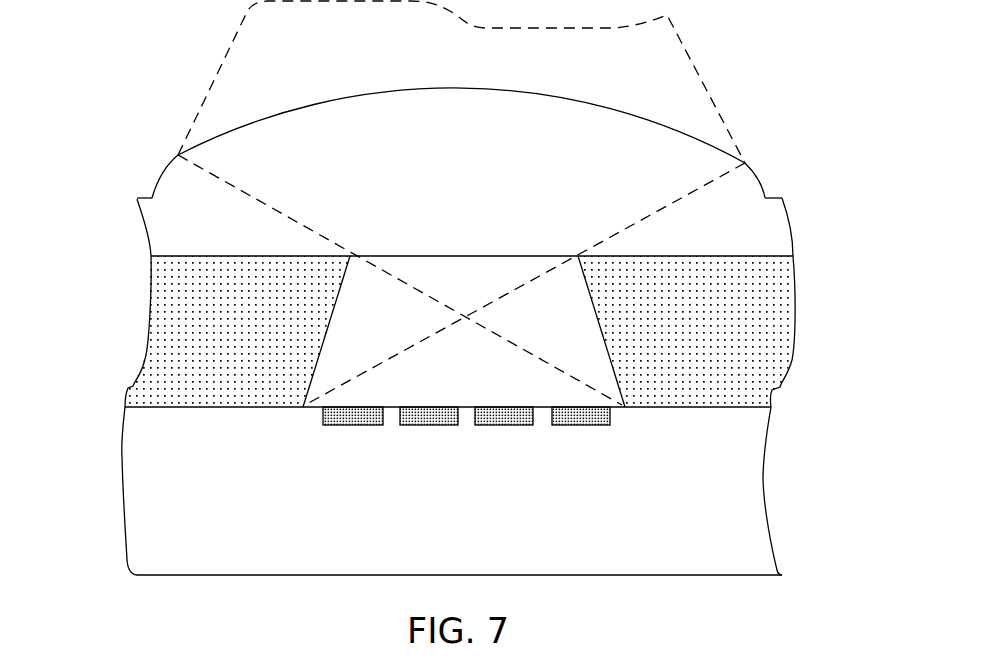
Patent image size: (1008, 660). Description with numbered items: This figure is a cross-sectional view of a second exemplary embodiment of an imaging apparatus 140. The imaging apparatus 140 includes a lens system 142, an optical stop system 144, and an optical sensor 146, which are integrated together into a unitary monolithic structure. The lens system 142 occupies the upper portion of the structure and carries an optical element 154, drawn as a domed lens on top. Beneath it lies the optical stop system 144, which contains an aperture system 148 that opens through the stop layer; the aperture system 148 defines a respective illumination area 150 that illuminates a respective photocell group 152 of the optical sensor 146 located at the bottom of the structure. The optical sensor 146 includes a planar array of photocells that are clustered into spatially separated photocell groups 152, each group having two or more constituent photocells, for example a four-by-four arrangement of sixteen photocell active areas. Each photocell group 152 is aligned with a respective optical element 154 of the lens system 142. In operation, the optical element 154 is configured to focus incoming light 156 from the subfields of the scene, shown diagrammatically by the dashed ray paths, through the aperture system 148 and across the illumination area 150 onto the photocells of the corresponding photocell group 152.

The imaging apparatus 140 is at (110, 82).
The lens system 142 is at (792, 227).
The optical stop system 144 is at (797, 315).
The optical sensor 146 is at (765, 507).
The aperture system 148 is at (463, 232).
The illumination area 150 is at (522, 370).
The photocell group 152 is at (323, 428).
The optical element 154 is at (508, 90).
The incoming light 156 is at (705, 80).